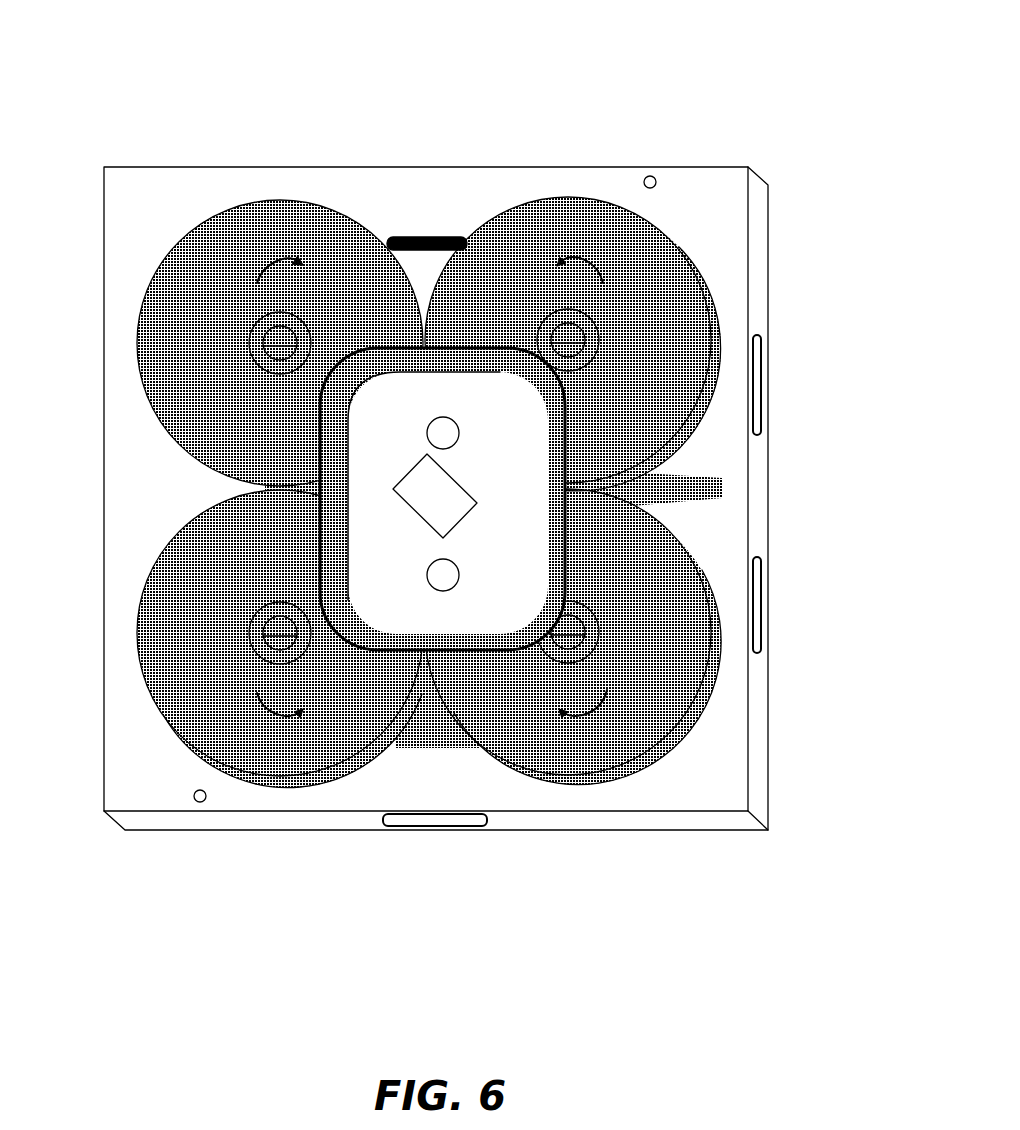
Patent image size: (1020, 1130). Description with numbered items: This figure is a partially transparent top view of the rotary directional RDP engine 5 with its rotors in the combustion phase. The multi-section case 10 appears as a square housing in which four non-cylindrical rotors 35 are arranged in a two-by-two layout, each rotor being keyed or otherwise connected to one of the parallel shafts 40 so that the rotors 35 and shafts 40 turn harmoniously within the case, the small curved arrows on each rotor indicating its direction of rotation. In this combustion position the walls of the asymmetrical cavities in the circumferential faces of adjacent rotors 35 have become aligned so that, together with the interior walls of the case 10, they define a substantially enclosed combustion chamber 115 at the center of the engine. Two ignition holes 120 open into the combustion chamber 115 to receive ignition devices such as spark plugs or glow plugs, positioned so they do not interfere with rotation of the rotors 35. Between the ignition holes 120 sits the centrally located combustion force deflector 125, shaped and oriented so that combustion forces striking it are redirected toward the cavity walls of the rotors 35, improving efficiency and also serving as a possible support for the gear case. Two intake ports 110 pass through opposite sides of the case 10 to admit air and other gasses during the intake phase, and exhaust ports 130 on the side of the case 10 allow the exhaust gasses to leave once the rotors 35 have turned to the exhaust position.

The RDP engine 5 is at (445, 461).
The multi-section case 10 is at (128, 158).
The non-cylindrical rotors 35 is at (665, 305).
The parallel shafts 40 is at (256, 346).
The intake ports 110 is at (425, 242).
The combustion chamber 115 is at (365, 516).
The ignition holes 120 is at (441, 418).
The combustion force deflector 125 is at (427, 482).
The exhaust ports 130 is at (816, 494).